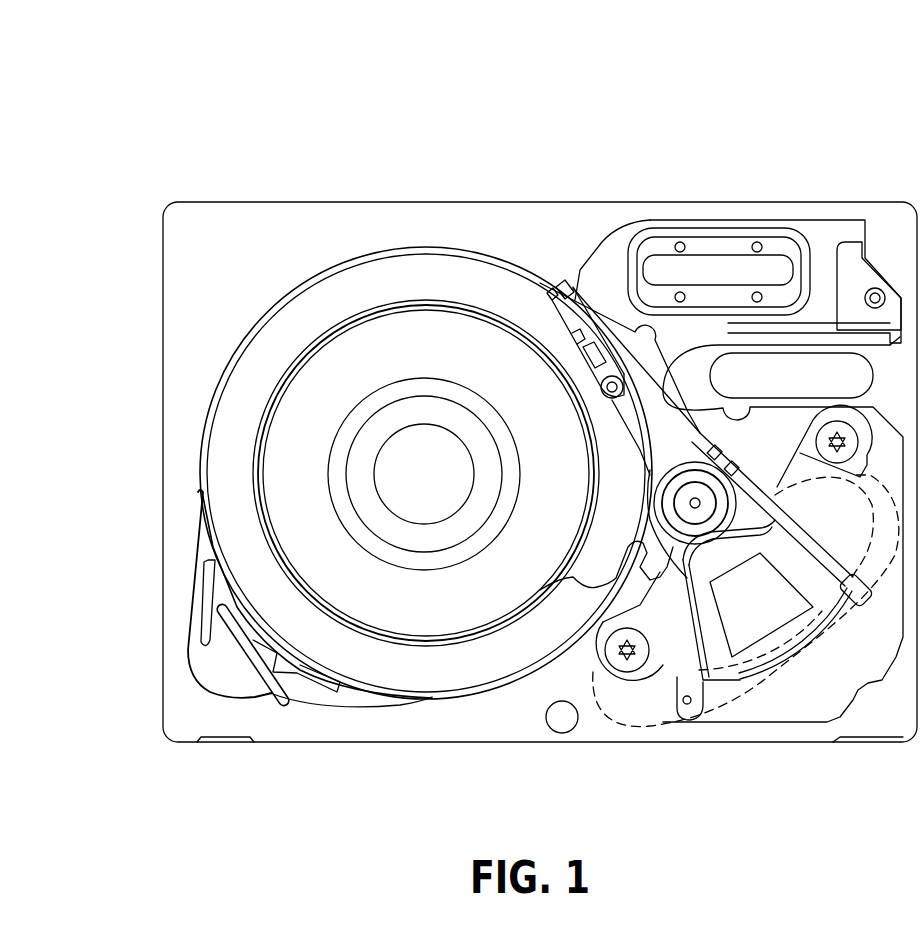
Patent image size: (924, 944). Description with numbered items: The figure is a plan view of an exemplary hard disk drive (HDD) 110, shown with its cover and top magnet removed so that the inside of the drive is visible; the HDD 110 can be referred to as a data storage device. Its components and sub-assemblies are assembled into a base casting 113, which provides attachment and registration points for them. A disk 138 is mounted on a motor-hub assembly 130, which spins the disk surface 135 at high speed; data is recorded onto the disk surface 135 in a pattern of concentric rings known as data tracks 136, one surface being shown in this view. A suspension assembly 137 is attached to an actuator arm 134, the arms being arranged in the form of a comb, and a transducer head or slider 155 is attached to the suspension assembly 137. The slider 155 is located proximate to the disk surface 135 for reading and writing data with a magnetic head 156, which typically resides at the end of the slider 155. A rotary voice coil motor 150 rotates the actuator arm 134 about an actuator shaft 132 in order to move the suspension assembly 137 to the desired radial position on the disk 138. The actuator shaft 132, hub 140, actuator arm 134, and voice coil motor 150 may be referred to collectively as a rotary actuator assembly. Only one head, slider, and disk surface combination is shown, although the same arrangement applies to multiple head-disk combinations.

The hard disk drive 110 is at (246, 133).
The base casting 113 is at (184, 428).
The motor-hub assembly 130 is at (425, 468).
The actuator shaft 132 is at (693, 505).
The actuator arm 134 is at (645, 388).
The disk surface 135 is at (352, 292).
The data tracks 136 is at (258, 533).
The suspension assembly 137 is at (578, 283).
The disk 138 is at (327, 290).
The hub 140 is at (598, 540).
The rotary voice coil motor 150 is at (763, 683).
The slider 155 is at (558, 293).
The magnetic head 156 is at (550, 293).